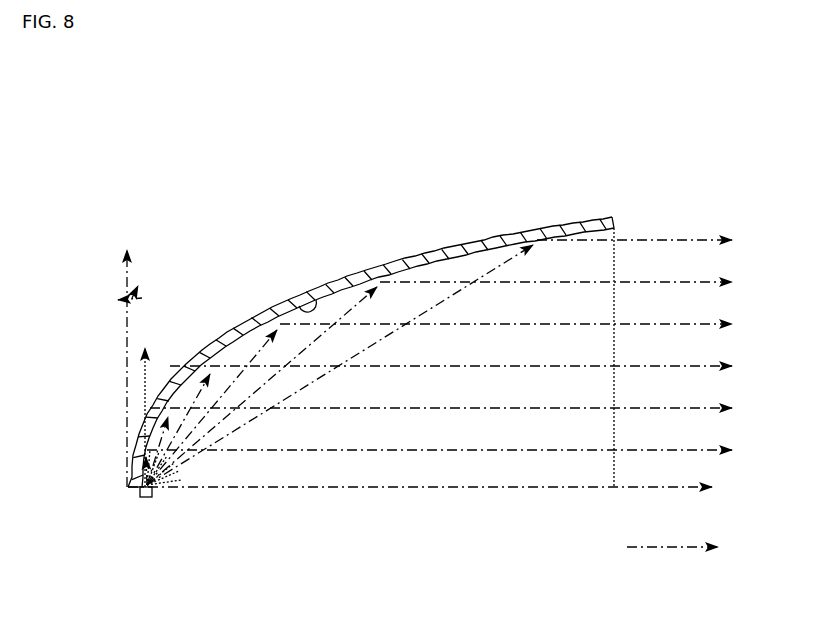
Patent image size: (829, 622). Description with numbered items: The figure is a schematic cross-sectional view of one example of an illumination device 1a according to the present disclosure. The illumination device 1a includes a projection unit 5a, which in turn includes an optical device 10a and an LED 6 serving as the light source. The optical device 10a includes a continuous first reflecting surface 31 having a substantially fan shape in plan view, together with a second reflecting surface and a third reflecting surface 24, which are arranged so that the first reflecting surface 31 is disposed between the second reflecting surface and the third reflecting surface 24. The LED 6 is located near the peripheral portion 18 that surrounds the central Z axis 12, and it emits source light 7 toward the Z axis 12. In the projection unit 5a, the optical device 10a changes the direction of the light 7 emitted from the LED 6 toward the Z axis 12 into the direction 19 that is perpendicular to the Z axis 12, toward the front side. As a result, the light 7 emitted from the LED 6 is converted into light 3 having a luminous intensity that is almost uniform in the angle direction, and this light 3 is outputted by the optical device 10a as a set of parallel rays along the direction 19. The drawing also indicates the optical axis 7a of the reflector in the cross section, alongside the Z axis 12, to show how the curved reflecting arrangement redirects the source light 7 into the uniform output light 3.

The illumination device 1a is at (455, 172).
The light 3 is at (677, 257).
The projection unit 5a is at (494, 215).
The LED 6 is at (148, 497).
The light 7 is at (253, 355).
The optical axis of reflector 7a is at (148, 390).
The optical device 10a is at (578, 205).
The Z axis 12 is at (125, 272).
The peripheral portion 18 is at (148, 295).
The direction 19 is at (660, 548).
The third reflecting surface 24 is at (413, 302).
The first reflecting surface 31 is at (302, 305).